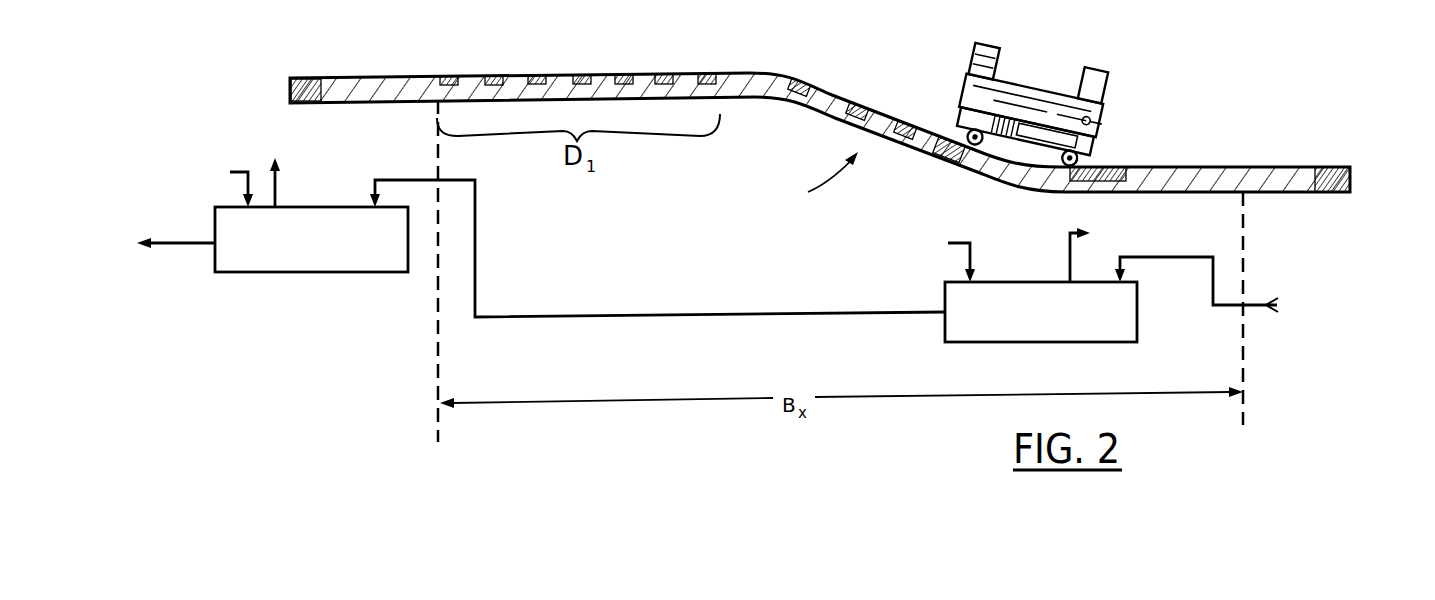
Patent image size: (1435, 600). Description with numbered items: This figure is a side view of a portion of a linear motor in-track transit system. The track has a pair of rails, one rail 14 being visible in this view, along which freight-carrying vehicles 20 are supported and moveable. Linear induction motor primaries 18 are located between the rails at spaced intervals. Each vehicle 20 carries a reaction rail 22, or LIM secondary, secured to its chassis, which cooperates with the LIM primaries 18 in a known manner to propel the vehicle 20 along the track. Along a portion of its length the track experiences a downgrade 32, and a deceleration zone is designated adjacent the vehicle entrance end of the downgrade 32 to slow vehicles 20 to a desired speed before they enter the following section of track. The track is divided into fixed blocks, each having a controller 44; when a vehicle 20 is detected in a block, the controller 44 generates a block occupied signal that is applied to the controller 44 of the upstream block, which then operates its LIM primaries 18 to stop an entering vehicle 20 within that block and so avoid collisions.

The rail 14 is at (818, 103).
The linear induction motor primary 18 is at (305, 101).
The freight-carrying vehicle 20 is at (995, 125).
The reaction rail 22 is at (1005, 148).
The downgrade 32 is at (820, 180).
The controller 44 is at (293, 272).